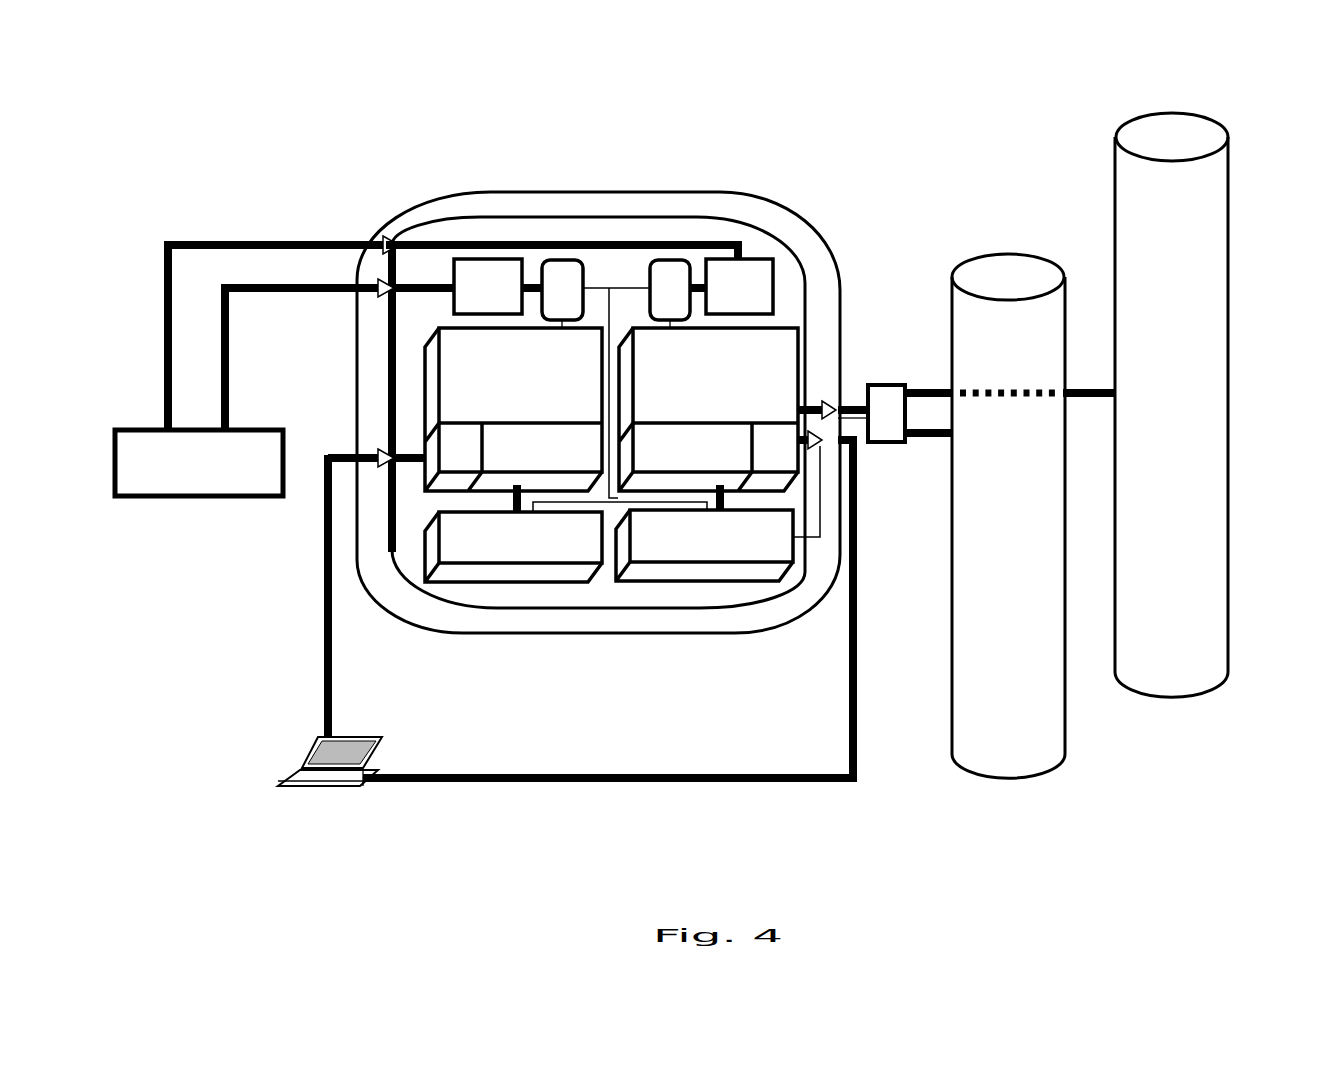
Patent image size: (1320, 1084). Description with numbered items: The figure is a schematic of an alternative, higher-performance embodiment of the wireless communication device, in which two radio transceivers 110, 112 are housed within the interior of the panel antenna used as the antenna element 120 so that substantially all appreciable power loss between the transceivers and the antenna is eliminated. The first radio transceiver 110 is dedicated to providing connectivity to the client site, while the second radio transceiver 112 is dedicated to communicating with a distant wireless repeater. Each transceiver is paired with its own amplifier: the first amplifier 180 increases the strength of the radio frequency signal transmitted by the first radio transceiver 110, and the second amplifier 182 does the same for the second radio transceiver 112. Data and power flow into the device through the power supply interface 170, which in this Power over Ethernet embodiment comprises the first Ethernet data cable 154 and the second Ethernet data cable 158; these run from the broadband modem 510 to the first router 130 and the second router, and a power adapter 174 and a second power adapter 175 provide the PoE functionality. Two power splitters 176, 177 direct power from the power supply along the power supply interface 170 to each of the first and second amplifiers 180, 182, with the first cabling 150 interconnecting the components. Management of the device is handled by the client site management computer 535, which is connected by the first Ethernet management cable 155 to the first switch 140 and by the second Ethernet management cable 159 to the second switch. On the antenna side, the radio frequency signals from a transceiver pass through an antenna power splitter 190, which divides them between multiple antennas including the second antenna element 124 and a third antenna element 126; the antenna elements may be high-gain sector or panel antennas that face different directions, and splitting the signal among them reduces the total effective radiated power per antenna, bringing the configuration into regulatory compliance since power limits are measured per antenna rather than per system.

The first radio transceiver 110 is at (431, 385).
The second radio transceiver 112 is at (793, 352).
The antenna element 120 is at (612, 637).
The second antenna element 124 is at (949, 293).
The third antenna element 126 is at (1111, 155).
The first router 130 is at (570, 483).
The first switch 140 is at (457, 485).
The first cabling 150 is at (597, 285).
The first Ethernet data cable 154 is at (435, 282).
The first Ethernet management cable 155 is at (324, 683).
The second Ethernet data cable 158 is at (627, 188).
The second Ethernet management cable 159 is at (859, 600).
The power supply interface 170 is at (285, 237).
The power adapter 174 is at (487, 256).
The second power adapter 175 is at (745, 256).
The power splitter 176 is at (562, 256).
The power splitter 177 is at (670, 256).
The first amplifier 180 is at (517, 575).
The second amplifier 182 is at (720, 572).
The antenna power splitter 190 is at (885, 446).
The broadband modem 510 is at (197, 499).
The client site management computer 535 is at (330, 780).